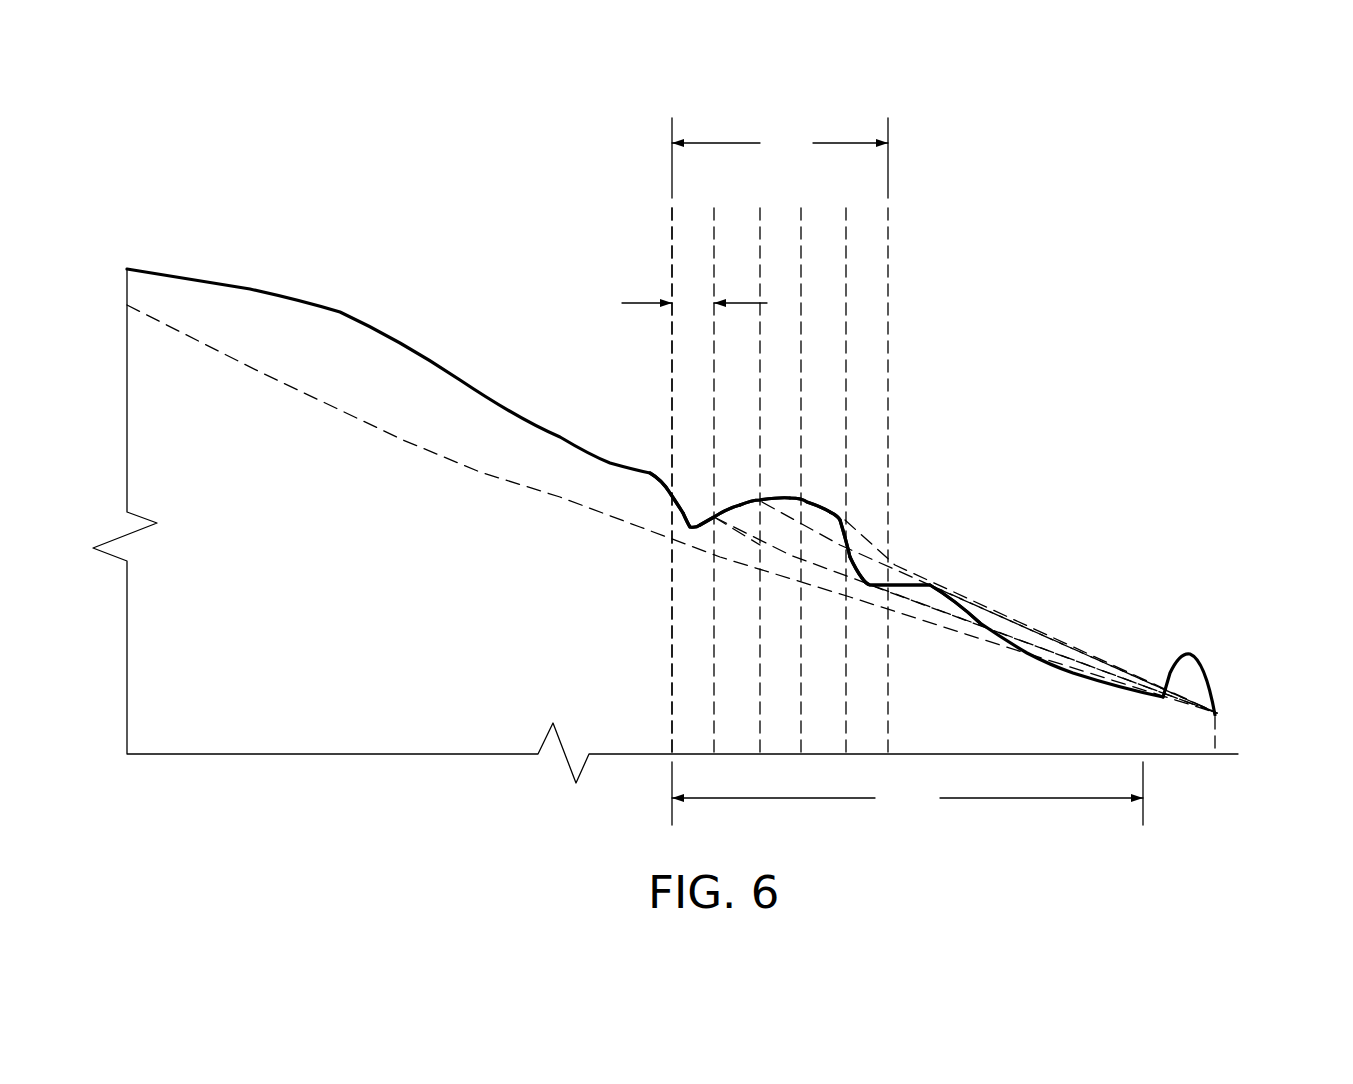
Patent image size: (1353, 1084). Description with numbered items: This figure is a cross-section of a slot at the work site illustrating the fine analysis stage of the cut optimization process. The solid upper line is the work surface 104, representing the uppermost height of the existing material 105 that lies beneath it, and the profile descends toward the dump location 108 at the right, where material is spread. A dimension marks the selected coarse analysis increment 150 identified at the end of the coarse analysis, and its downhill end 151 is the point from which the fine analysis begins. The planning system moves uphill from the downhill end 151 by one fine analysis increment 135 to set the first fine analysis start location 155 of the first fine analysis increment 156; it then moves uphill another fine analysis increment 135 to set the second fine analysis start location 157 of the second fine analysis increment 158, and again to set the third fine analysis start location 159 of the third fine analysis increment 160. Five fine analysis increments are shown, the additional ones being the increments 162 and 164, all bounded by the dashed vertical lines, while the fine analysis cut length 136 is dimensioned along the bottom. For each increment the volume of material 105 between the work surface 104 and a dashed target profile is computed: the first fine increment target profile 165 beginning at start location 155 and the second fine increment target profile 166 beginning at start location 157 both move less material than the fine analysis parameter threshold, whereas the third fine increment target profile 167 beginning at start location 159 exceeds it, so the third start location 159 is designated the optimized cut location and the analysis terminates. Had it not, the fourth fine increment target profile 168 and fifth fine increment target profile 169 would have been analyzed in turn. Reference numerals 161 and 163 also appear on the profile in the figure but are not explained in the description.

The work surface 104 is at (250, 289).
The material 105 is at (323, 357).
The dump location 108 is at (1220, 650).
The selected coarse analysis increment 150 is at (780, 158).
The fine analysis increment 135 is at (692, 303).
The fine analysis cut length 136 is at (907, 793).
The fifth fine increment target profile 169 is at (690, 515).
The first channel forward wall 163 is at (673, 507).
The first channel aft wall 161 is at (717, 513).
The third fine analysis start location 159 is at (760, 500).
The second fine analysis start location 157 is at (803, 500).
The third fine increment target profile 167 is at (845, 512).
The first fine analysis start location 155 is at (850, 518).
The second fine increment target profile 166 is at (873, 522).
The downhill end 151 is at (890, 587).
The first fine increment target profile 165 is at (917, 582).
The fourth fine increment target profile 168 is at (735, 530).
The fine analysis increment 164 is at (693, 754).
The fine analysis increment 162 is at (742, 754).
The third fine analysis increment 160 is at (778, 754).
The second fine analysis increment 158 is at (823, 754).
The first fine analysis increment 156 is at (867, 754).